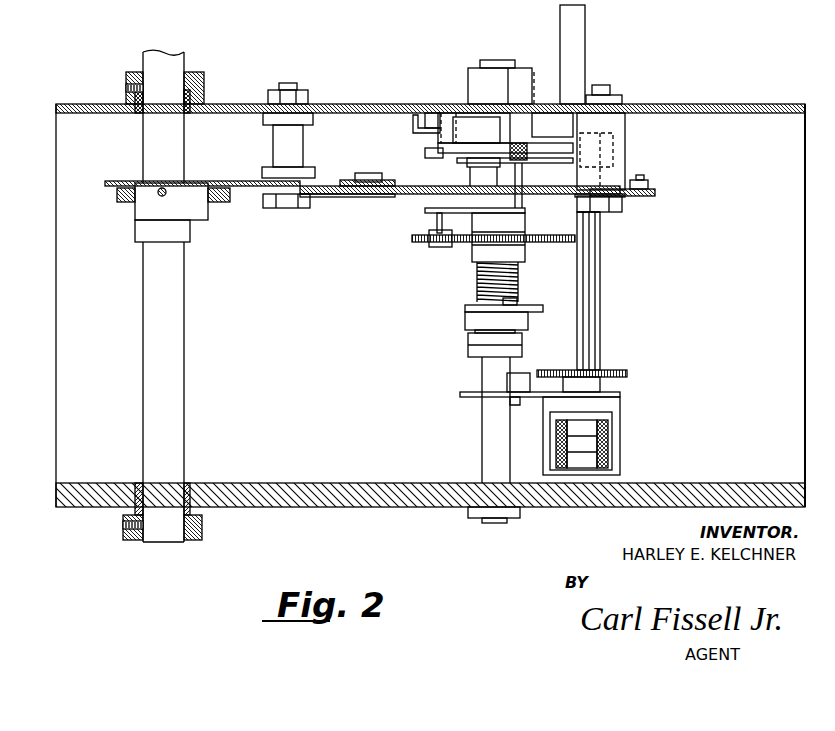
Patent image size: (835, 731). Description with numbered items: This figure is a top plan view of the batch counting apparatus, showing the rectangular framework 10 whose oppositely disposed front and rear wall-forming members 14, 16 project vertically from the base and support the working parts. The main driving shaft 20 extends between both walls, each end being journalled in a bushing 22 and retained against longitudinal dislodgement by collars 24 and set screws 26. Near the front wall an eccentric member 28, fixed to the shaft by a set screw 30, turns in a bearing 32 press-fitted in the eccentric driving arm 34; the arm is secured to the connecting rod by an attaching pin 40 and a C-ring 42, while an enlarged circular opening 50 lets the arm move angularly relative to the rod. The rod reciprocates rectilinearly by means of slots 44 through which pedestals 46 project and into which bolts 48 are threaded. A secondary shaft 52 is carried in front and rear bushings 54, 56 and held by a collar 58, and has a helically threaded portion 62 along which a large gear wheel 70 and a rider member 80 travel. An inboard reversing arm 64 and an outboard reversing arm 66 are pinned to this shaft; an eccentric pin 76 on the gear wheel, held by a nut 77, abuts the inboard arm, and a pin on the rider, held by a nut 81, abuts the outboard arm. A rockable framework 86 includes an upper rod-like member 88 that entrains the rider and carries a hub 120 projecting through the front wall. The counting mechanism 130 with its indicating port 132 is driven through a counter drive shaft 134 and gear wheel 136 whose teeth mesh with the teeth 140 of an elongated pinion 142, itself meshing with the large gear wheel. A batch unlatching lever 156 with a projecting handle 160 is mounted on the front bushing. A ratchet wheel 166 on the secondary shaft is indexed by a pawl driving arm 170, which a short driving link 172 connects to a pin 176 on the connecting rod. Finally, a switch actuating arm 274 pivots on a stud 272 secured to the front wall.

The rectangular framework 10 is at (650, 78).
The front wall-forming member 14 is at (758, 113).
The rear wall-forming member 16 is at (320, 483).
The main driving shaft 20 is at (143, 350).
The bushing 22 is at (191, 100).
The collar 24 is at (197, 72).
The set screw 26 is at (126, 85).
The eccentric member 28 is at (140, 212).
The set screw 30 is at (158, 190).
The bearing 32 is at (224, 202).
The eccentric driving arm 34 is at (232, 180).
The attaching pin 40 is at (366, 197).
The C-ring 42 is at (349, 180).
The slot 44 is at (323, 194).
The pedestal 46 is at (283, 208).
The bolt 48 is at (296, 200).
The enlarged circular opening 50 is at (303, 180).
The secondary shaft 52 is at (486, 452).
The front bushing 54 is at (481, 125).
The rear bushing 56 is at (470, 518).
The collar 58 is at (506, 70).
The helically threaded portion 62 is at (485, 284).
The inboard reversing arm 64 is at (425, 211).
The outboard reversing arm 66 is at (492, 333).
The large gear wheel 70 is at (590, 250).
The eccentric projecting pin 76 is at (437, 222).
The nut 77 is at (431, 248).
The rider member 80 is at (470, 322).
The nut 81 is at (512, 305).
The rockable framework 86 is at (460, 399).
The upper rod-like member 88 is at (505, 385).
The projecting member or hub 120 is at (535, 72).
The mechanical counting mechanism 130 is at (620, 462).
The indicating port 132 is at (598, 430).
The counter drive shaft 134 is at (600, 388).
The gear wheel 136 is at (628, 374).
The teeth 140 is at (413, 130).
The elongated pinion 142 is at (621, 142).
The batch unlatching lever 156 is at (562, 106).
The projecting handle 160 is at (578, 31).
The ratchet wheel 166 is at (425, 153).
The pawl driving arm 170 is at (490, 168).
The driving link 172 is at (636, 180).
The pin 176 is at (645, 180).
The stud 272 is at (445, 122).
The switch actuating arm 274 is at (462, 125).